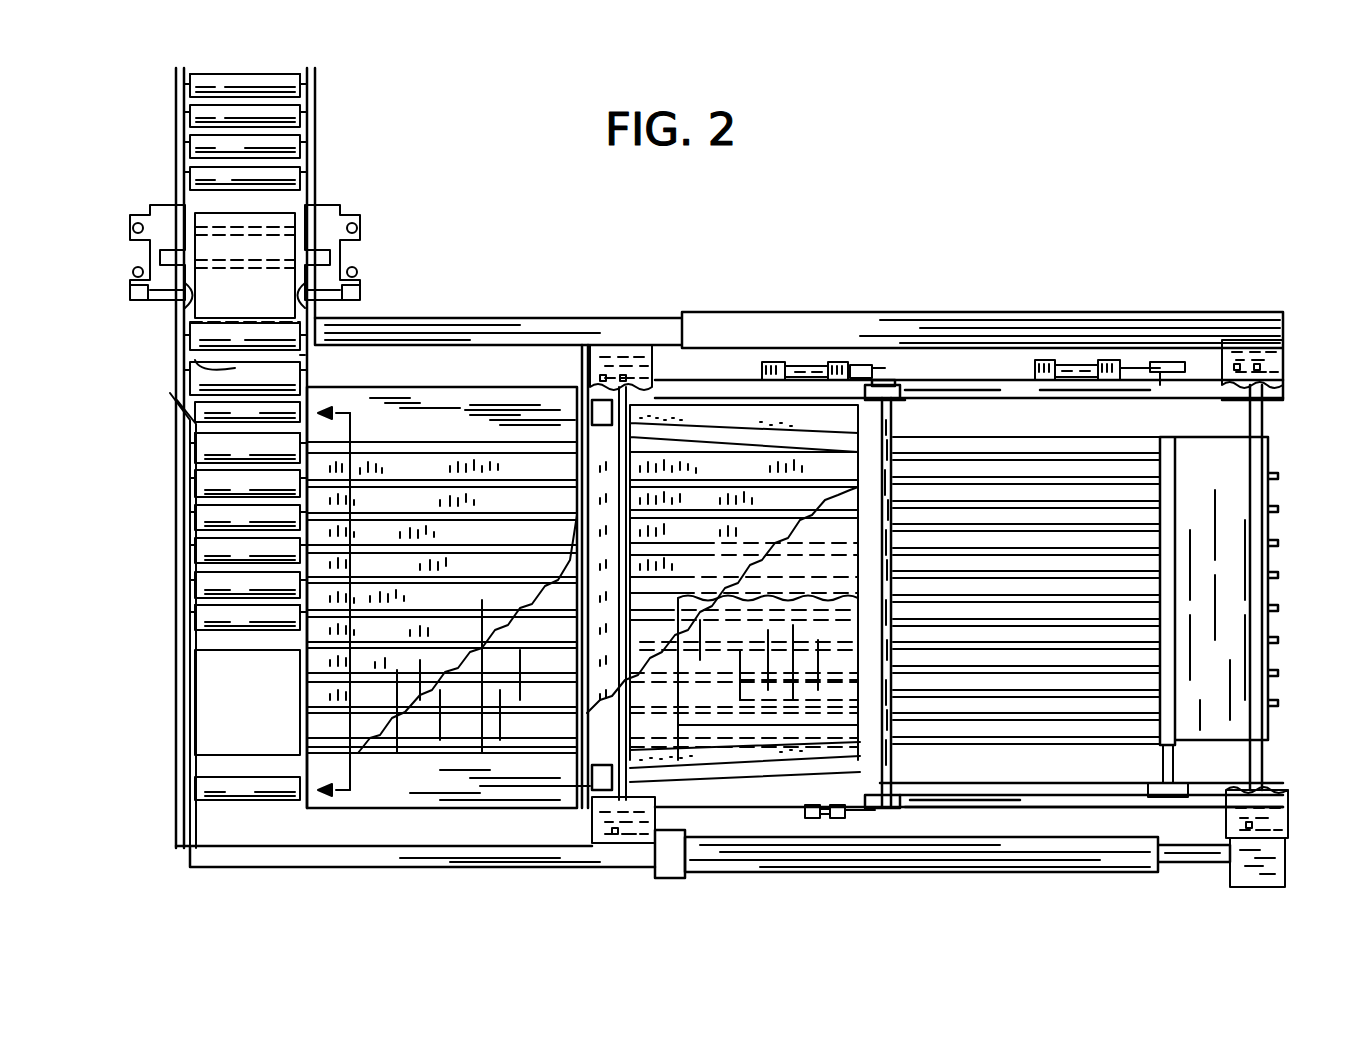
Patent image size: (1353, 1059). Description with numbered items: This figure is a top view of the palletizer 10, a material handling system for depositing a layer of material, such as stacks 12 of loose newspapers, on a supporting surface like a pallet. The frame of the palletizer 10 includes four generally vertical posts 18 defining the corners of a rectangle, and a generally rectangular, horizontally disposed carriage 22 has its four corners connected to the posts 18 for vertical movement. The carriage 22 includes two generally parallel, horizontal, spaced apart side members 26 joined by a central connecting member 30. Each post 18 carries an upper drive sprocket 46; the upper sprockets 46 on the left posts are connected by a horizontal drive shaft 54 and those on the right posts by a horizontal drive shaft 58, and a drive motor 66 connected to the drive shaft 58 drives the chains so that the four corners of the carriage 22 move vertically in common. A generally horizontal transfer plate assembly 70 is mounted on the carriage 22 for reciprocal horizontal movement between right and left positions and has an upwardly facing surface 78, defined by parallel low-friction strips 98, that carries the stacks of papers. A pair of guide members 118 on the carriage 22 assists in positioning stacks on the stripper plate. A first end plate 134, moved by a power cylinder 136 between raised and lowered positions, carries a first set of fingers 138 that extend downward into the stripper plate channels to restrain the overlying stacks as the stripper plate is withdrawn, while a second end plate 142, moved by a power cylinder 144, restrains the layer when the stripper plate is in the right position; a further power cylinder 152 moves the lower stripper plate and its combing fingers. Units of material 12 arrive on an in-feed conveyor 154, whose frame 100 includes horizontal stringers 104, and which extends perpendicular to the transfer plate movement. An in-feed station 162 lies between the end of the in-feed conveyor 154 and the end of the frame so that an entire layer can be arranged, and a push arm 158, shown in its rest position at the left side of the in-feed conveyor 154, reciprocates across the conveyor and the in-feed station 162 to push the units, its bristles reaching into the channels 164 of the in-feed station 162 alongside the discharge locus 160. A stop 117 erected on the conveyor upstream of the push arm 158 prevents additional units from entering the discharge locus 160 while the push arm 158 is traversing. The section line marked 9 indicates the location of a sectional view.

The palletizer 10 is at (775, 299).
The stacks of loose newspapers 12 is at (207, 217).
The posts 18 is at (648, 345).
The carriage 22 is at (1092, 795).
The side members 26 is at (1002, 395).
The central connecting member 30 is at (878, 435).
The upper drive sprocket 46 is at (590, 364).
The drive shaft 54 is at (618, 510).
The drive shaft 58 is at (1262, 432).
The drive motor 66 is at (1285, 852).
The transfer plate assembly 70 is at (829, 467).
The upwardly facing surface 78 is at (789, 532).
The low-friction strips 98 is at (577, 620).
The frame 100 is at (178, 127).
The stringers 104 is at (317, 185).
The stop 117 is at (205, 378).
The guide members 118 is at (728, 420).
The first end plate 134 is at (880, 640).
The power cylinder 136 is at (805, 362).
The first set of fingers 138 is at (782, 712).
The second end plate 142 is at (1232, 604).
The power cylinder 144 is at (1078, 362).
The power cylinder 152 is at (833, 818).
The in-feed conveyor 154 is at (356, 133).
The push arm 158 is at (195, 500).
The discharge locus 160 is at (220, 635).
The in-feed station 162 is at (432, 470).
The channels 164 is at (397, 520).
The section line 9 is at (355, 600).